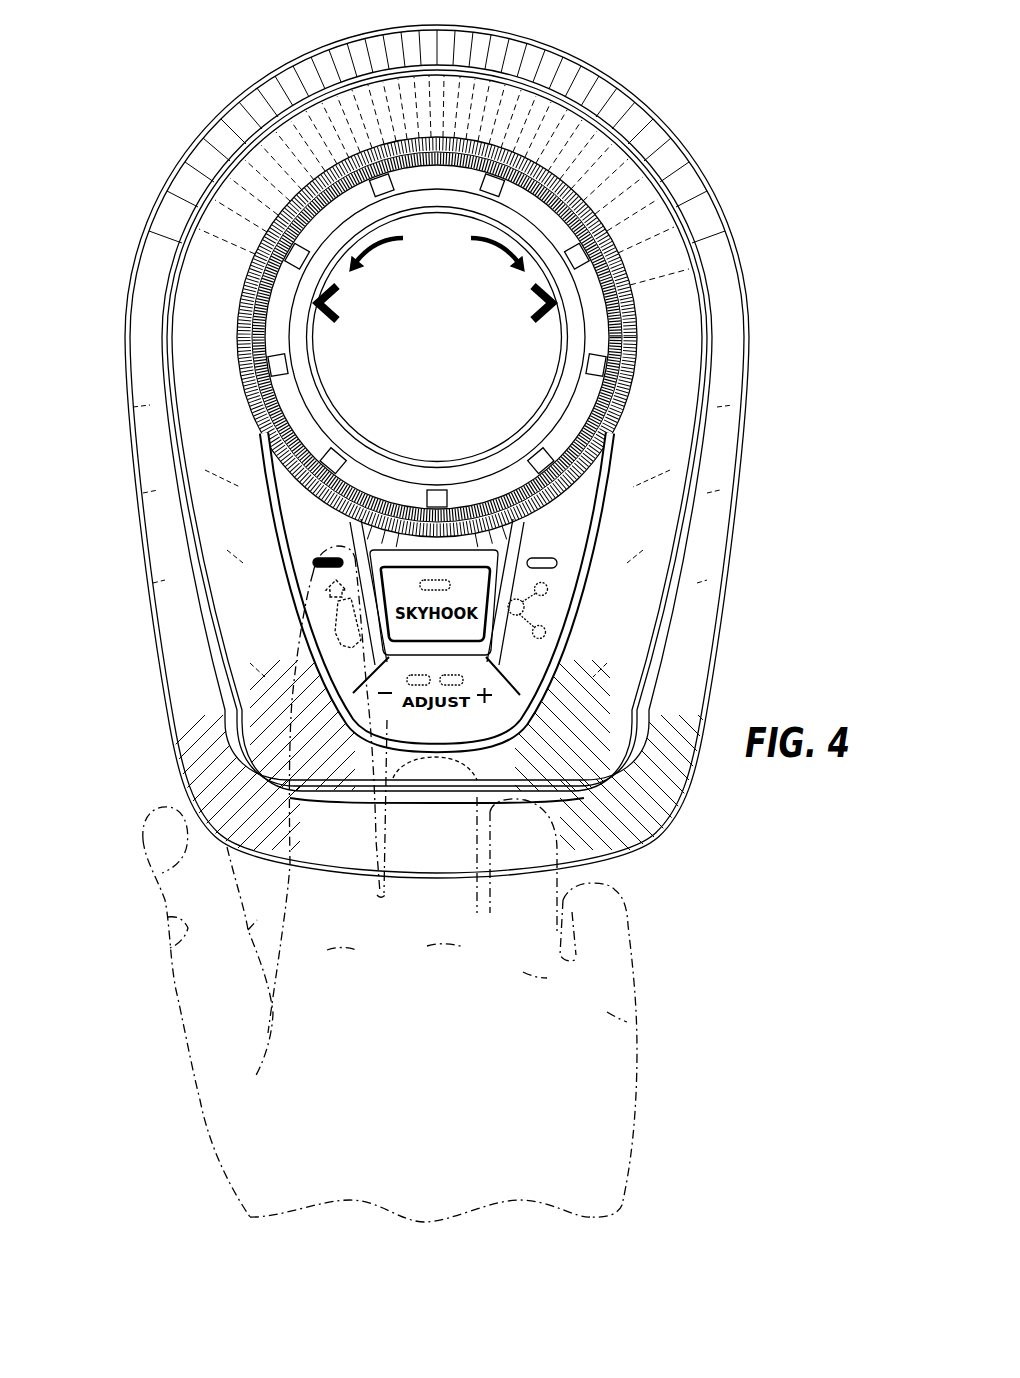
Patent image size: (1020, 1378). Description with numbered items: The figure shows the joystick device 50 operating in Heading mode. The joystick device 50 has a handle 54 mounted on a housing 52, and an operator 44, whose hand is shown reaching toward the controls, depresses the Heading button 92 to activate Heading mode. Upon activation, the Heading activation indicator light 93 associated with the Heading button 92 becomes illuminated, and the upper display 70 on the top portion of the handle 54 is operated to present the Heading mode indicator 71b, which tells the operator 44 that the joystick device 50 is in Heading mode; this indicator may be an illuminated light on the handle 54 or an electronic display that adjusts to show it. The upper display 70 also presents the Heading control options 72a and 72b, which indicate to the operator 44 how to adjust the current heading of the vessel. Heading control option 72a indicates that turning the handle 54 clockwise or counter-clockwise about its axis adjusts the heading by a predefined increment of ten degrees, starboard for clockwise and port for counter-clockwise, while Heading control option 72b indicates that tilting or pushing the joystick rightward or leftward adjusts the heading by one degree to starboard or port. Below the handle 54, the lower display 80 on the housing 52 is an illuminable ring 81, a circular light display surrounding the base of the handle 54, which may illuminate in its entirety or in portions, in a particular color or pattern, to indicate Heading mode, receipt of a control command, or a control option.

The operator 44 is at (636, 977).
The joystick device 50 is at (747, 103).
The housing 52 is at (593, 163).
The handle 54 is at (617, 253).
The upper display 70 is at (444, 234).
The Heading mode indicator 71b is at (510, 387).
The Heading control option 72a is at (437, 220).
The Heading control option 72b is at (327, 283).
The lower display 80 is at (257, 255).
The illuminable ring 81 is at (262, 300).
The Heading button 92 is at (338, 621).
The Heading activation indicator light 93 is at (315, 560).